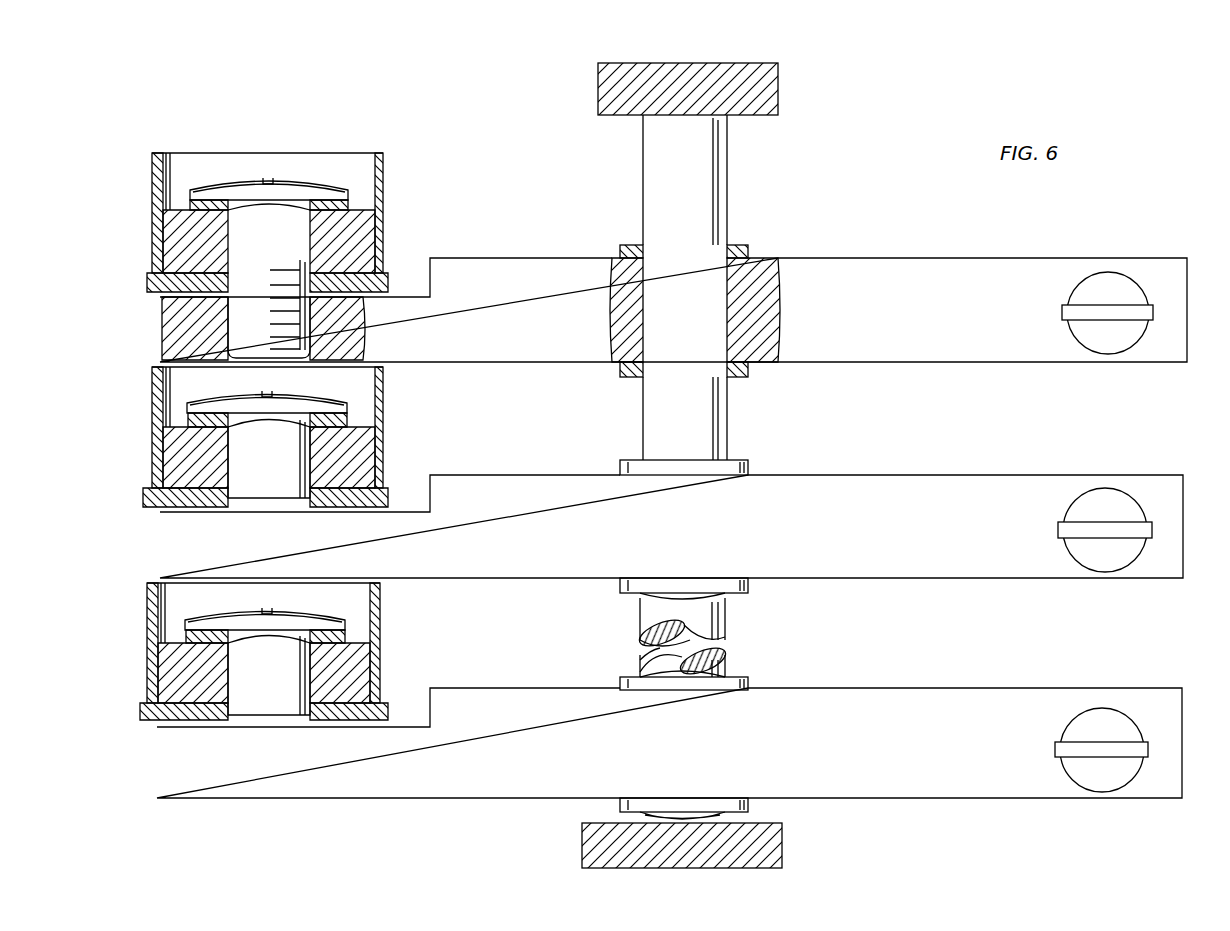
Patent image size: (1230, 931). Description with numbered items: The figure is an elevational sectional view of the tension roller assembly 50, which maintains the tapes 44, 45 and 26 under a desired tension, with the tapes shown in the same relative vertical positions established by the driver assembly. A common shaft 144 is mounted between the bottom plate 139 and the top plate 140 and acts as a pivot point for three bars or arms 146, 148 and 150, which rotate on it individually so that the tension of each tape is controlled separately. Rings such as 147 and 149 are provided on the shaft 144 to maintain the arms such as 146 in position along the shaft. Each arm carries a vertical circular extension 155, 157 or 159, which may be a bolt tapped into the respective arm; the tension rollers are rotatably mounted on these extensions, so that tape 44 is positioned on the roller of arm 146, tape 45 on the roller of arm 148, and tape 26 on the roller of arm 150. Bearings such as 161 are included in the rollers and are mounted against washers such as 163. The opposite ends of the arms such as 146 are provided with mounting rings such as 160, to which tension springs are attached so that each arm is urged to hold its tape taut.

The tape 26 is at (240, 682).
The tape 44 is at (235, 229).
The tape 45 is at (276, 437).
The tension roller assembly 50 is at (827, 207).
The bottom plate 139 is at (742, 848).
The top plate 140 is at (745, 75).
The shaft 144 is at (693, 155).
The arm 146 is at (880, 272).
The ring 147 is at (745, 247).
The arm 148 is at (868, 498).
The ring 149 is at (620, 378).
The arm 150 is at (822, 706).
The vertical circular extension 155 is at (183, 297).
The vertical circular extension 157 is at (270, 460).
The vertical circular extension 159 is at (248, 677).
The mounting ring 160 is at (1098, 312).
The bearing 161 is at (185, 243).
The washer 163 is at (155, 283).